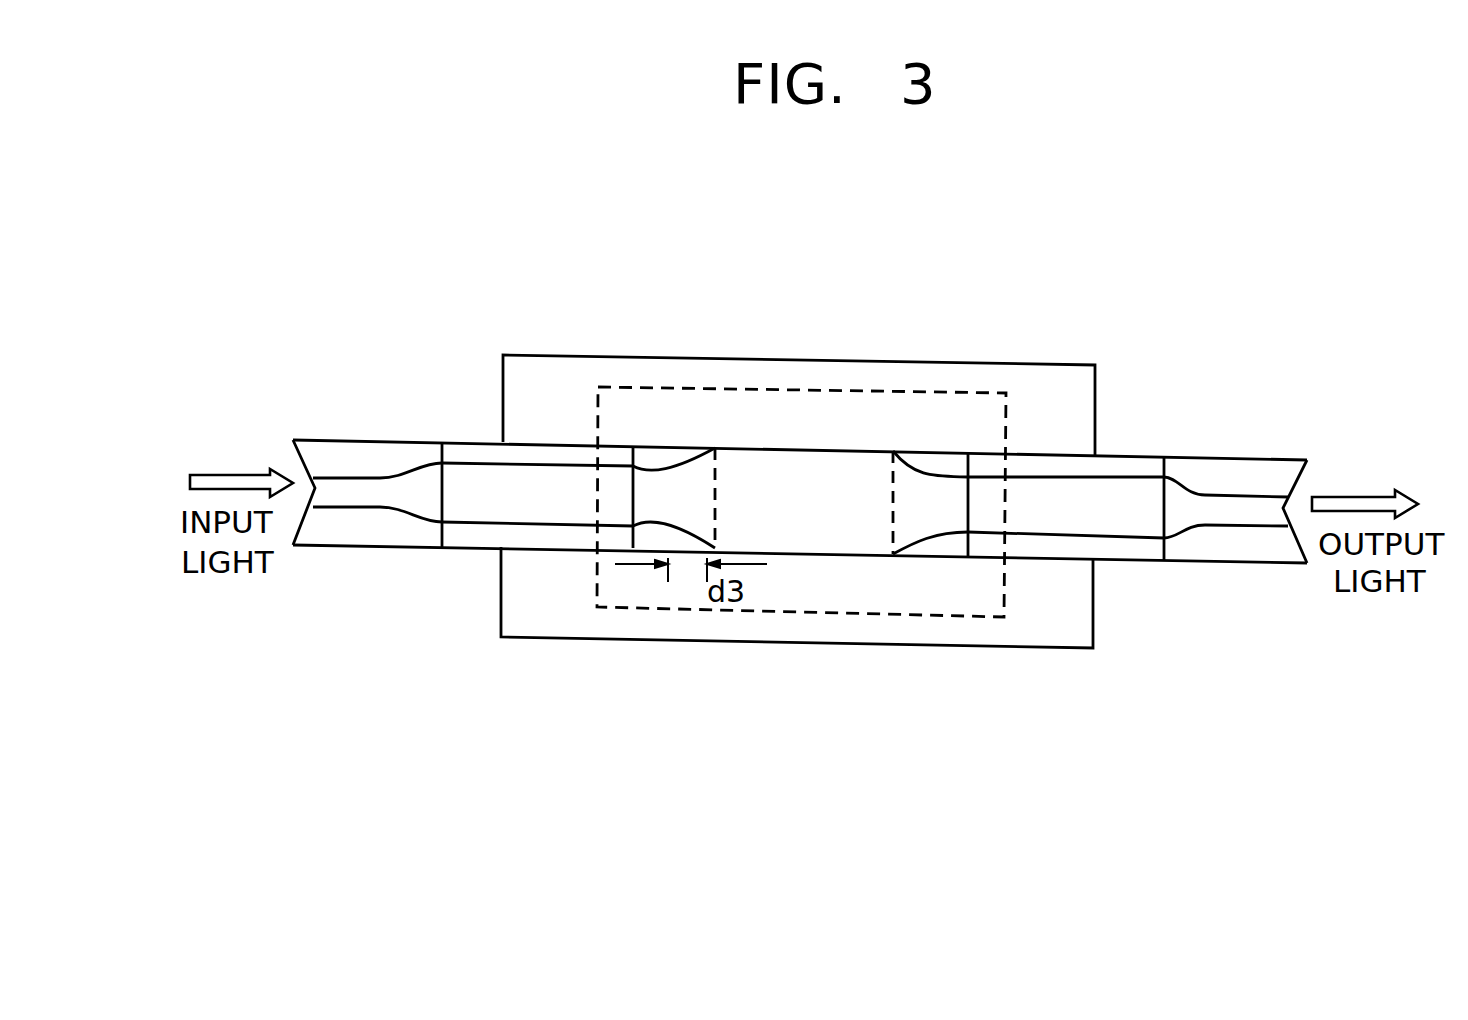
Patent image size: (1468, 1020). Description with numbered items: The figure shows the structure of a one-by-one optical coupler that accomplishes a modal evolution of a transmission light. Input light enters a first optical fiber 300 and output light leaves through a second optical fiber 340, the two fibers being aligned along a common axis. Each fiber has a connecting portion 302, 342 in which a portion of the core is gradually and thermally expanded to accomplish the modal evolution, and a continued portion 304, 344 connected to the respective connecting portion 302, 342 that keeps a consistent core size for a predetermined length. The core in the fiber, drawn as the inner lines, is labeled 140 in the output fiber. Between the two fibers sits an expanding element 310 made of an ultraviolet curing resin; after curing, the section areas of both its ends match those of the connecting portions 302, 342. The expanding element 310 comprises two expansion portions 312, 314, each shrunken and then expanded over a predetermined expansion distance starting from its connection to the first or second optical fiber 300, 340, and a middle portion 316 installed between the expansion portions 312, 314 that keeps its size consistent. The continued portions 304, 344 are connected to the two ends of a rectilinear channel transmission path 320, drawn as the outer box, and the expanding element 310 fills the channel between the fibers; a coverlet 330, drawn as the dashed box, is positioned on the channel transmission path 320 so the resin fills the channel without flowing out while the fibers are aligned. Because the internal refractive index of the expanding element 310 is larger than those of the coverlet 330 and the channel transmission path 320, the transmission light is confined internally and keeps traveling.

The optical fiber core 140 is at (1192, 492).
The first optical fiber 300 is at (460, 619).
The connecting portion 302 is at (348, 547).
The continued portion 304 is at (627, 718).
The expanding element 310 is at (803, 387).
The expansion portion 312 is at (697, 447).
The expansion portion 314 is at (924, 425).
The middle portion 316 is at (788, 455).
The channel transmission path 320 is at (535, 362).
The coverlet 330 is at (990, 393).
The second optical fiber 340 is at (1132, 600).
The connecting portion 342 is at (1226, 559).
The continued portion 344 is at (1120, 553).